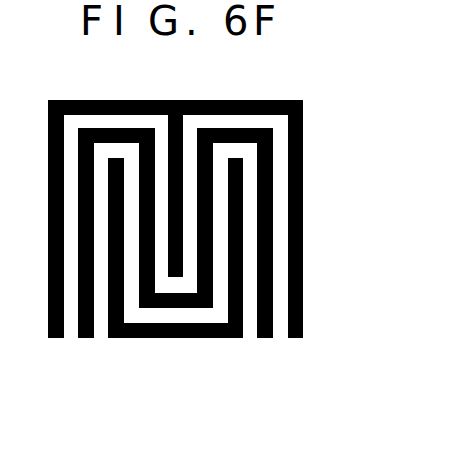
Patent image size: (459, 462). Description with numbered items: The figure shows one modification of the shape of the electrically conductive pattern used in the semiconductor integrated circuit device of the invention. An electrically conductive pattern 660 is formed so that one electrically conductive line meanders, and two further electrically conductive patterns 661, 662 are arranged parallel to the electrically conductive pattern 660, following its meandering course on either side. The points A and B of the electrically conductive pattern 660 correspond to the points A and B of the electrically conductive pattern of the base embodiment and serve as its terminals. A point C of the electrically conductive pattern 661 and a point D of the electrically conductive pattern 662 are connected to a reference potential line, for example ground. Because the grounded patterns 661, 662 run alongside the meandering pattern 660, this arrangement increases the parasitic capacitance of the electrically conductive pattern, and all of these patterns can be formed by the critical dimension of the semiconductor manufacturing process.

The electrically conductive pattern 661 is at (221, 101).
The electrically conductive pattern 660 is at (95, 322).
The electrically conductive pattern 662 is at (210, 340).
The point A is at (267, 340).
The point B is at (80, 340).
The point C is at (53, 340).
The point D is at (119, 158).